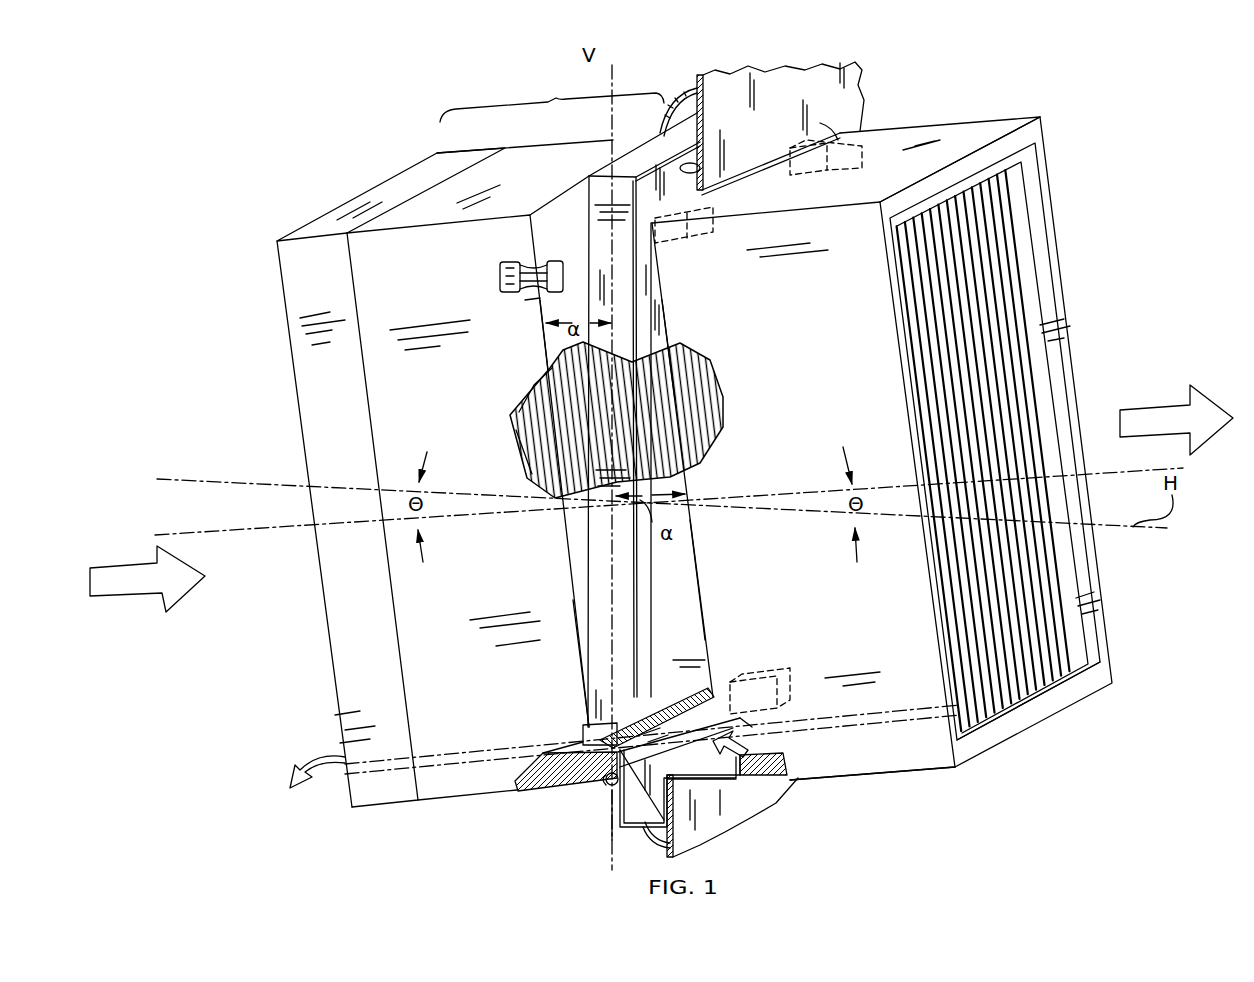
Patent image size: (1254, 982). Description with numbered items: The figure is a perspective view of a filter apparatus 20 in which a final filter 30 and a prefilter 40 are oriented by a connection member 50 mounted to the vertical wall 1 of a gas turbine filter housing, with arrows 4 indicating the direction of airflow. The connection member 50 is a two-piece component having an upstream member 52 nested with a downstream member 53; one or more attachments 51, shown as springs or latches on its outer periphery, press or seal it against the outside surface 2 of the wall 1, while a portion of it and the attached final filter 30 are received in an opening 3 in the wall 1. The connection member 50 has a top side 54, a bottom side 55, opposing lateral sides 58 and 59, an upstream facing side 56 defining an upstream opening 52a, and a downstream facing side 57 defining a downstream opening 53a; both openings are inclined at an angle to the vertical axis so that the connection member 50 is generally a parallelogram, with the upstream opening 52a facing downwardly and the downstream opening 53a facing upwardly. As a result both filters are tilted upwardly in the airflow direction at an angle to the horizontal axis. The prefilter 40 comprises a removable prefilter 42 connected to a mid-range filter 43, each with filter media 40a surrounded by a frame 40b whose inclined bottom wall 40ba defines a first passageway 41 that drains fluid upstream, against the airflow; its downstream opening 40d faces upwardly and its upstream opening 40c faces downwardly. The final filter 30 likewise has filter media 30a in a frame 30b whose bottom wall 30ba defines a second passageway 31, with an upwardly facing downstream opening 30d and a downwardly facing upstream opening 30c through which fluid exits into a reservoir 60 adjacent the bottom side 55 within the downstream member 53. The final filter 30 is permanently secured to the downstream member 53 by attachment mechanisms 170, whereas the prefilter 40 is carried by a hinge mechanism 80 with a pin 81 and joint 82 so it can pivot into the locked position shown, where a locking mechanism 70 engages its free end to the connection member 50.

The wall 1 is at (808, 62).
The outside surface 2 is at (707, 167).
The opening 3 is at (835, 130).
The air flow direction 4 is at (122, 598).
The filter apparatus 20 is at (236, 127).
The final filter 30 is at (990, 106).
The filter media 30a is at (987, 325).
The frame 30b is at (1040, 252).
The bottom wall 30ba is at (1037, 692).
The final filter upstream opening 30c is at (679, 545).
The final filter downstream opening 30d is at (1093, 343).
The second passageway 31 is at (868, 725).
The prefilter 40 is at (552, 99).
The filter media 40a is at (537, 432).
The frame 40b is at (398, 790).
The bottom wall 40ba is at (547, 783).
The prefilter upstream opening 40c is at (274, 327).
The prefilter downstream opening 40d is at (655, 284).
The first passageway 41 is at (325, 760).
The removable prefilter 42 is at (308, 383).
The mid-range filter 43 is at (441, 352).
The connection member 50 is at (582, 185).
The attachment 51 is at (688, 90).
The upstream member 52 is at (600, 257).
The upstream opening 52a is at (541, 338).
The downstream member 53 is at (698, 627).
The downstream opening 53a is at (712, 575).
The top side 54 is at (631, 157).
The bottom side 55 is at (623, 834).
The upstream facing side 56 is at (512, 300).
The downstream facing side 57 is at (687, 325).
The lateral side 58 is at (855, 122).
The lateral side 59 is at (598, 622).
The reservoir 60 is at (722, 780).
The locking mechanism 70 is at (497, 262).
The hinge mechanism 80 is at (598, 783).
The pin 81 is at (678, 785).
The joint 82 is at (613, 790).
The attachment mechanism 170 is at (722, 222).